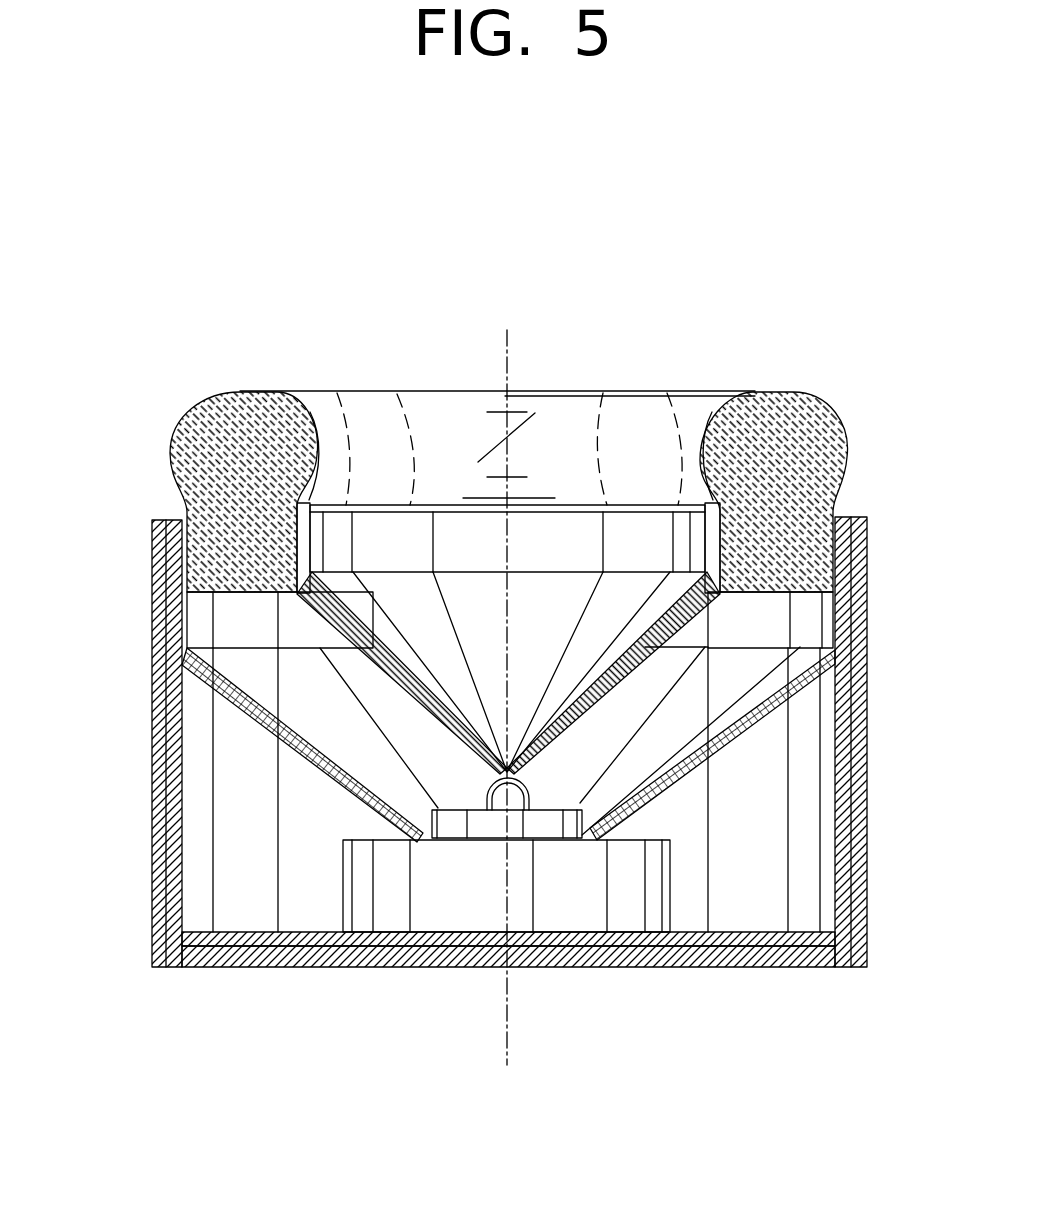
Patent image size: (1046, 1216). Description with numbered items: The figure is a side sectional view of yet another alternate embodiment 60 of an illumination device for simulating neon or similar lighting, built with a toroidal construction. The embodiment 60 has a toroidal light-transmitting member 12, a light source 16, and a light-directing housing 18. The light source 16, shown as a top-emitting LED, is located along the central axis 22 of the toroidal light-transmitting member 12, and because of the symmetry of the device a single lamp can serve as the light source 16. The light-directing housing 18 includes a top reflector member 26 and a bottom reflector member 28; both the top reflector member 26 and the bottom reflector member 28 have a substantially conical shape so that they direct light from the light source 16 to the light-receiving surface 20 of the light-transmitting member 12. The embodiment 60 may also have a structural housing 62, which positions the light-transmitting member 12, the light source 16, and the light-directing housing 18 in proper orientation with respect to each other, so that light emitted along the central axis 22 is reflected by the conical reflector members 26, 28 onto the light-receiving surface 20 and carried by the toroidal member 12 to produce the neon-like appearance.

The alternate embodiment 60 is at (148, 333).
The structural housing 62 is at (163, 838).
The light-transmitting member 12 is at (796, 400).
The light-receiving surface 20 is at (237, 597).
The light-directing housing 18 is at (393, 603).
The top reflector member 26 is at (465, 592).
The light source 16 is at (500, 803).
The bottom reflector member 28 is at (727, 747).
The central axis 22 is at (510, 1040).